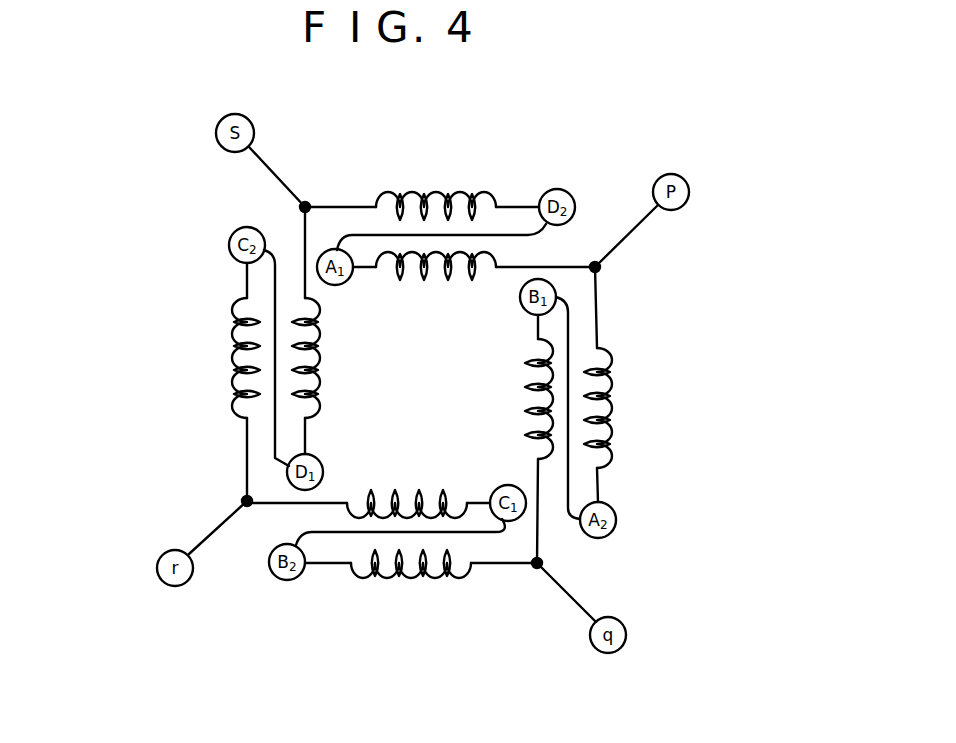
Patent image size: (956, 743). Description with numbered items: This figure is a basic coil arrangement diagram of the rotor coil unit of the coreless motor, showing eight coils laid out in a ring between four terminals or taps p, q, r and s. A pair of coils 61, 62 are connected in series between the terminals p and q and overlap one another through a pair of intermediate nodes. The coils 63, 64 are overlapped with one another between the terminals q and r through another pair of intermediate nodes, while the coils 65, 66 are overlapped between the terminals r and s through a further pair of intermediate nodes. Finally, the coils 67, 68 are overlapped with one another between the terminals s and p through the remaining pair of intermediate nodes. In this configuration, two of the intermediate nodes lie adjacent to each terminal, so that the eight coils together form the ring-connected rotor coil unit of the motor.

The coil 61 is at (613, 352).
The coil 62 is at (552, 457).
The coil 63 is at (408, 580).
The coil 64 is at (357, 512).
The coil 65 is at (230, 383).
The coil 66 is at (293, 310).
The coil 67 is at (440, 192).
The coil 68 is at (483, 257).